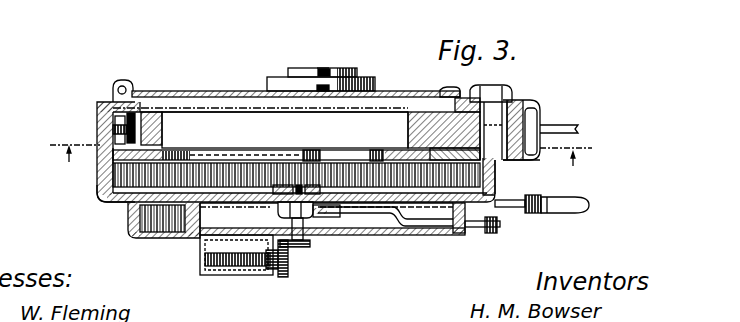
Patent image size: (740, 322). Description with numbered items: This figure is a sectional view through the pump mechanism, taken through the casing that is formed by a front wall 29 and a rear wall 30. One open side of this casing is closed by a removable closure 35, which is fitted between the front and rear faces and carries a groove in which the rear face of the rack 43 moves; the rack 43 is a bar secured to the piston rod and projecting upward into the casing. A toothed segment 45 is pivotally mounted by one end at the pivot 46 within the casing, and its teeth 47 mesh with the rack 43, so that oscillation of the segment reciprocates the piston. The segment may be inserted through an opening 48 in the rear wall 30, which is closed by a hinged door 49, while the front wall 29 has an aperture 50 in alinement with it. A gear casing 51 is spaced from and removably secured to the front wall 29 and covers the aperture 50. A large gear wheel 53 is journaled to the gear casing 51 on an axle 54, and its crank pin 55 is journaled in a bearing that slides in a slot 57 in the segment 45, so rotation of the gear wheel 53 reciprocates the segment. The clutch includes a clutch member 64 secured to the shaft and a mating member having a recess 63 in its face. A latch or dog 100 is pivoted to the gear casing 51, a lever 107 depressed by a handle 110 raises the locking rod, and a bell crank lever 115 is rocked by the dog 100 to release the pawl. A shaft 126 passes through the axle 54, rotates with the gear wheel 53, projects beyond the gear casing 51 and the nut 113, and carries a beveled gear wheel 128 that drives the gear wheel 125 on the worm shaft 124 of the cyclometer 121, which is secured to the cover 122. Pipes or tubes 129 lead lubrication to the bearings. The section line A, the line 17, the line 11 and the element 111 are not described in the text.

The rack 43 is at (120, 126).
The closure 35 is at (113, 129).
The teeth 47 is at (152, 118).
The hinged door 49 is at (233, 91).
The clutch member 64 is at (276, 78).
The recess 63 is at (301, 70).
The section line A is at (312, 63).
The opening 48 is at (440, 95).
The toothed segment 45 is at (415, 126).
The rear wall 30 is at (508, 94).
The pivot 46 is at (527, 112).
The pipes or tubes 129 is at (578, 128).
The center line 17 is at (574, 154).
The center line 11 is at (63, 150).
The aperture 50 is at (233, 140).
The crank pin 55 is at (345, 158).
The slot 57 is at (366, 152).
The axle 54 is at (273, 187).
The gear casing 51 is at (494, 170).
The front wall 29 is at (514, 162).
The lever 107 is at (510, 208).
The handle 110 is at (575, 212).
The latch or dog 100 is at (343, 213).
The bell crank lever 115 is at (420, 225).
The stub fitting 111 is at (478, 230).
The nut 113 is at (322, 222).
The shaft 126 is at (284, 216).
The beveled gear wheel 128 is at (300, 248).
The gear wheel 125 is at (286, 268).
The worm shaft 124 is at (268, 276).
The cyclometer 121 is at (250, 276).
The cover 122 is at (170, 239).
The gear wheel 53 is at (142, 204).